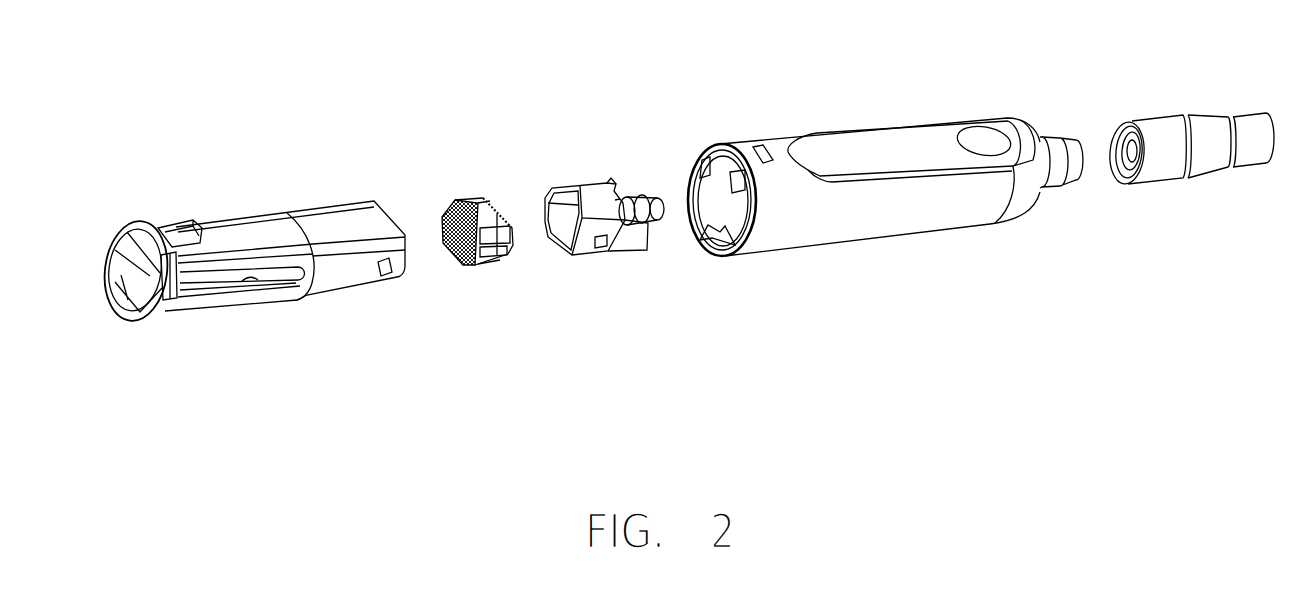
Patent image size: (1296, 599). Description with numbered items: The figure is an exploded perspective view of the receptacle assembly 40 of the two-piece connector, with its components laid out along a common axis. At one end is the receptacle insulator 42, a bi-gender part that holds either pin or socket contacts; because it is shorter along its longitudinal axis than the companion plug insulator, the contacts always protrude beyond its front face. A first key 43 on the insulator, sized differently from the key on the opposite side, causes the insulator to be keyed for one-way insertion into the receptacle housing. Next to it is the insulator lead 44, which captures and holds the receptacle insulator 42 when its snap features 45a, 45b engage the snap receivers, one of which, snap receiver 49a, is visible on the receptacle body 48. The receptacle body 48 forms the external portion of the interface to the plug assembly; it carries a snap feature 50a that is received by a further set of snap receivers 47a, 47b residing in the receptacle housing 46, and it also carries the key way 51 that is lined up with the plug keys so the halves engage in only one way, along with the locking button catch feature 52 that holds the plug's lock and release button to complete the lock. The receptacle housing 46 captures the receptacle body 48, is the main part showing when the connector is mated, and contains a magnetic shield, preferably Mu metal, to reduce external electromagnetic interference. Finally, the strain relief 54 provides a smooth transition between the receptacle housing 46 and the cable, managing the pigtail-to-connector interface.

The receptacle assembly 40 is at (348, 88).
The receptacle insulator 42 is at (478, 210).
The first key 43 is at (488, 267).
The insulator lead 44 is at (584, 203).
The snap feature 45a is at (645, 251).
The snap feature 45b is at (611, 181).
The receptacle housing 46 is at (875, 148).
The snap receiver 47a is at (708, 252).
The snap receiver 47b is at (760, 152).
The receptacle body 48 is at (270, 230).
The snap receiver 49a is at (388, 280).
The snap feature 50a is at (184, 212).
The key way 51 is at (250, 279).
The locking button catch feature 52 is at (115, 240).
The strain relief 54 is at (1158, 133).